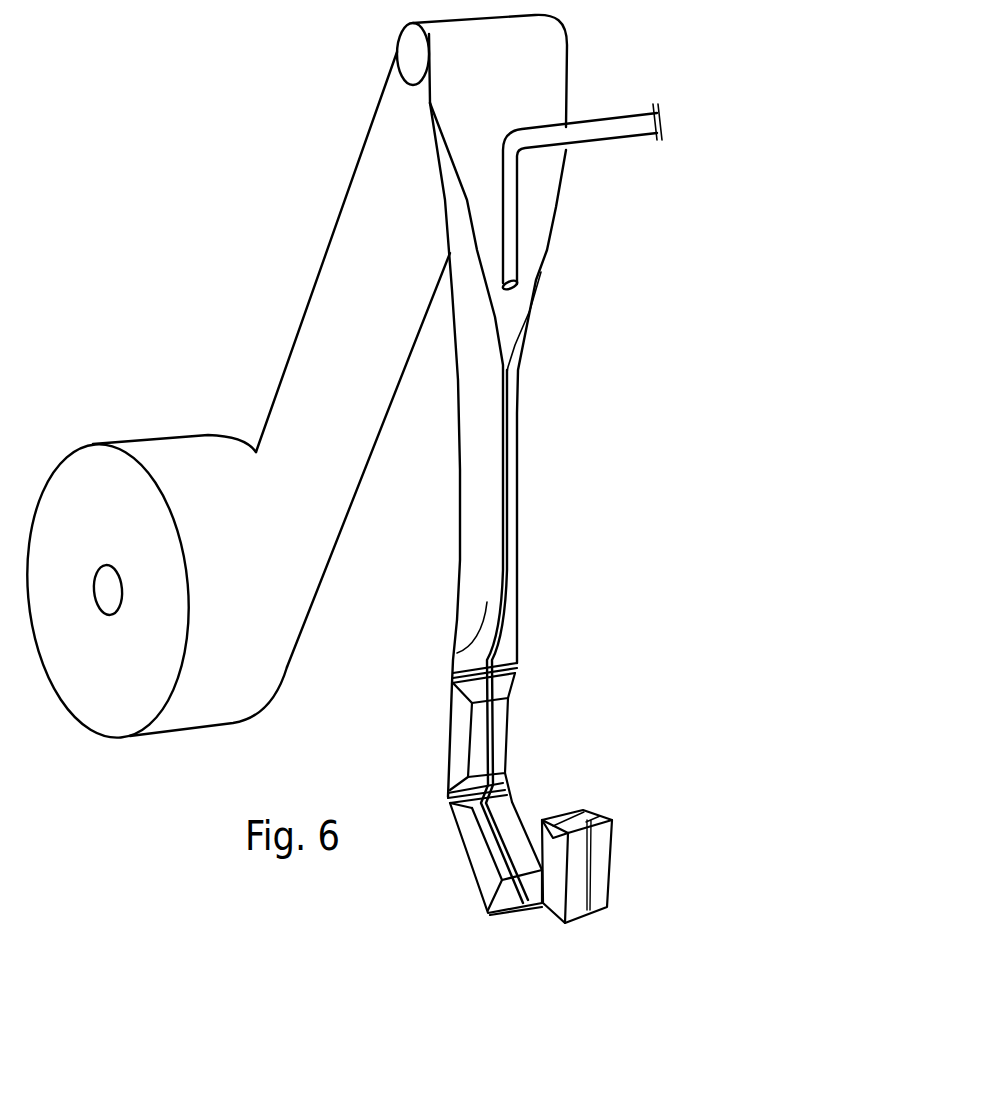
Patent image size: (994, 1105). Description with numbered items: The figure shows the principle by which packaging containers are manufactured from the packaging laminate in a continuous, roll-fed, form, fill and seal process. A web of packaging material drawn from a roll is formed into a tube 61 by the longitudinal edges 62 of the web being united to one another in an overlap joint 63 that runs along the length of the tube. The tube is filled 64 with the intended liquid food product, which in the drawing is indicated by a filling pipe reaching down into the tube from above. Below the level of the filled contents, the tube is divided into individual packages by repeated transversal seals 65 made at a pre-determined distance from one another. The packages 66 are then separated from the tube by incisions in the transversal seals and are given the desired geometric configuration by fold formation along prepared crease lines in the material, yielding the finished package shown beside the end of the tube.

The tube 61 is at (480, 462).
The longitudinal edges 62 is at (473, 223).
The overlap joint 63 is at (500, 398).
The filling 64 is at (607, 127).
The transversal seals 65 is at (508, 675).
The packages 66 is at (600, 867).